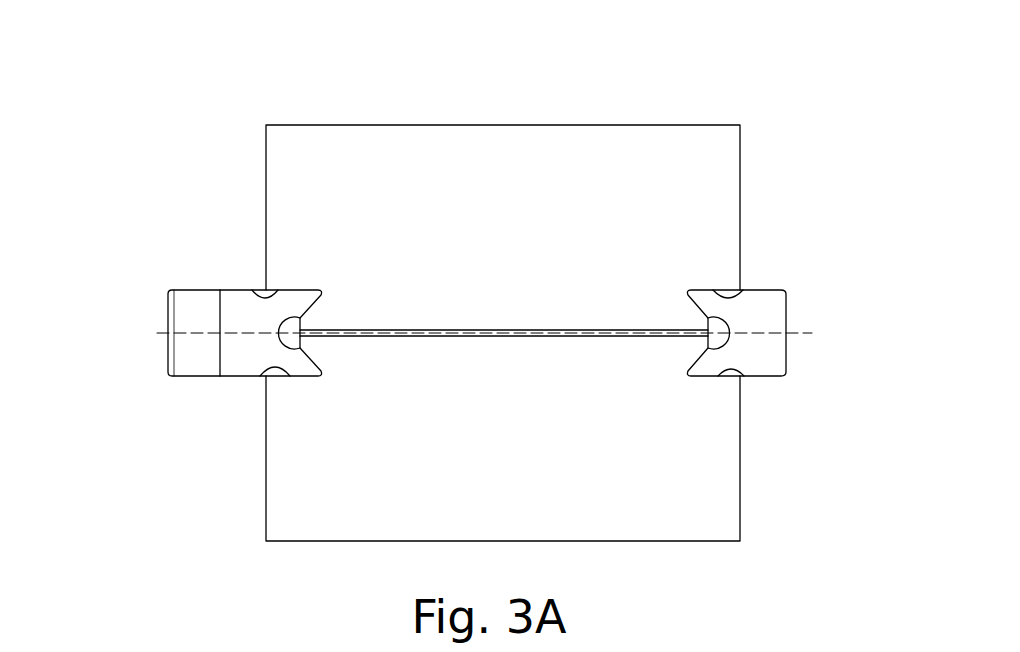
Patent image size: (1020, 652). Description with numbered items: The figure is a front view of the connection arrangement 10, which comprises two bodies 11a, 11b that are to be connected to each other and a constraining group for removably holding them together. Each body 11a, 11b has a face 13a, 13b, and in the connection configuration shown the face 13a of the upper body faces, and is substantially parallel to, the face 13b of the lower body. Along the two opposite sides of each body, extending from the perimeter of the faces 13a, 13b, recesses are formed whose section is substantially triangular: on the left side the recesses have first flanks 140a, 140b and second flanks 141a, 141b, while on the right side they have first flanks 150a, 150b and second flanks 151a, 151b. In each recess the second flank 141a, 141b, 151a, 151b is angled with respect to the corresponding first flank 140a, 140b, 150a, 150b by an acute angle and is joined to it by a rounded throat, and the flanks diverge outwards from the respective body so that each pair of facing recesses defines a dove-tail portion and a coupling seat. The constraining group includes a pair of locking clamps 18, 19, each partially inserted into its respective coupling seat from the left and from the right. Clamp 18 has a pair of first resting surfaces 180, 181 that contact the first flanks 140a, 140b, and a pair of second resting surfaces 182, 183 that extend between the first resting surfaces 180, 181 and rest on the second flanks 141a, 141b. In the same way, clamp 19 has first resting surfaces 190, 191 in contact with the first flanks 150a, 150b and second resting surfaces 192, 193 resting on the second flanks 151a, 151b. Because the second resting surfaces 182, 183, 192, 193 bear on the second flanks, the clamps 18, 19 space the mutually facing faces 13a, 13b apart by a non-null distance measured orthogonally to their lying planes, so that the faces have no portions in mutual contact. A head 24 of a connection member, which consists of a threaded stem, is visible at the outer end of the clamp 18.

The connection arrangement 10 is at (207, 108).
The body 11a is at (500, 162).
The body 11b is at (556, 490).
The face 13a is at (540, 332).
The face 13b is at (410, 333).
The locking clamp 18 is at (238, 363).
The locking clamp 19 is at (780, 340).
The head 24 is at (190, 310).
The first resting surface 180 is at (231, 290).
The first resting surface 181 is at (245, 377).
The second resting surface 182 is at (301, 299).
The second resting surface 183 is at (312, 373).
The first flank 140a is at (252, 290).
The first flank 140b is at (260, 377).
The second flank 141a is at (299, 293).
The second flank 141b is at (303, 377).
The first resting surface 190 is at (773, 290).
The first resting surface 191 is at (768, 378).
The second resting surface 192 is at (702, 312).
The second resting surface 193 is at (697, 371).
The first flank 150a is at (744, 291).
The first flank 150b is at (742, 377).
The second flank 151a is at (688, 290).
The second flank 151b is at (691, 373).